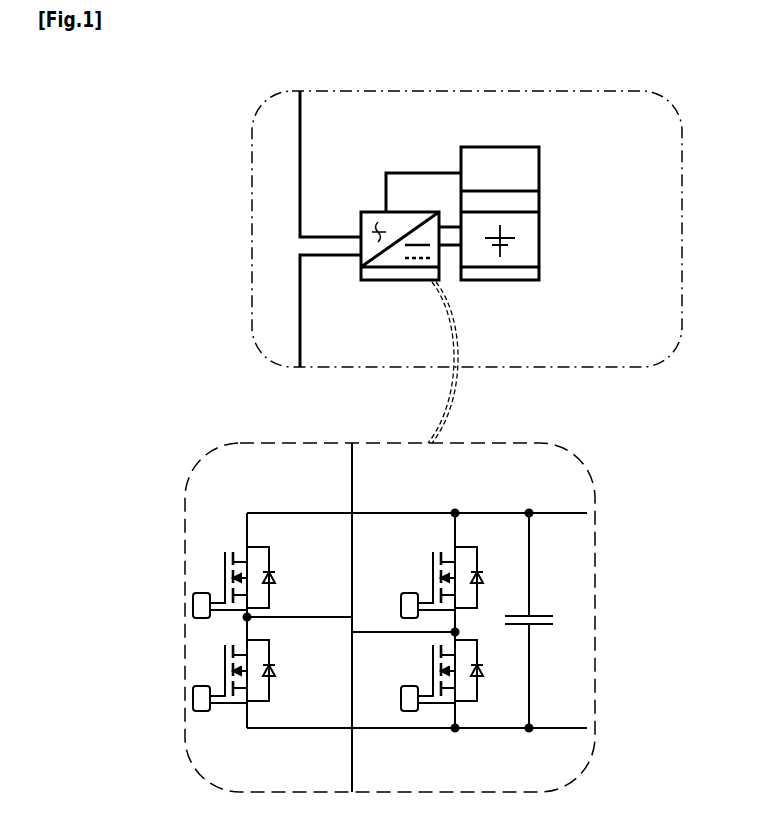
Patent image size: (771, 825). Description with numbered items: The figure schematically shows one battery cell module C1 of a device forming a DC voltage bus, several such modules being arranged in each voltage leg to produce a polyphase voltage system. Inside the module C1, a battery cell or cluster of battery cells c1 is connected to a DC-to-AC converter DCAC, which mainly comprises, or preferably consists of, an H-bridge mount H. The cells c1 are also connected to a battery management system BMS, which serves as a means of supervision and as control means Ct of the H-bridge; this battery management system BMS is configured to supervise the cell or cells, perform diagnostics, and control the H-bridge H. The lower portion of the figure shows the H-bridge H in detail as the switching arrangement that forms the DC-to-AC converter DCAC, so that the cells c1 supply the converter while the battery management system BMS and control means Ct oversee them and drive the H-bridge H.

The battery cell module C1 is at (603, 68).
The DC-to-AC converter DCAC is at (378, 221).
The battery management system BMS is at (515, 172).
The control means Ct is at (542, 266).
The battery cell c1 is at (497, 272).
The H-bridge mount H is at (400, 270).